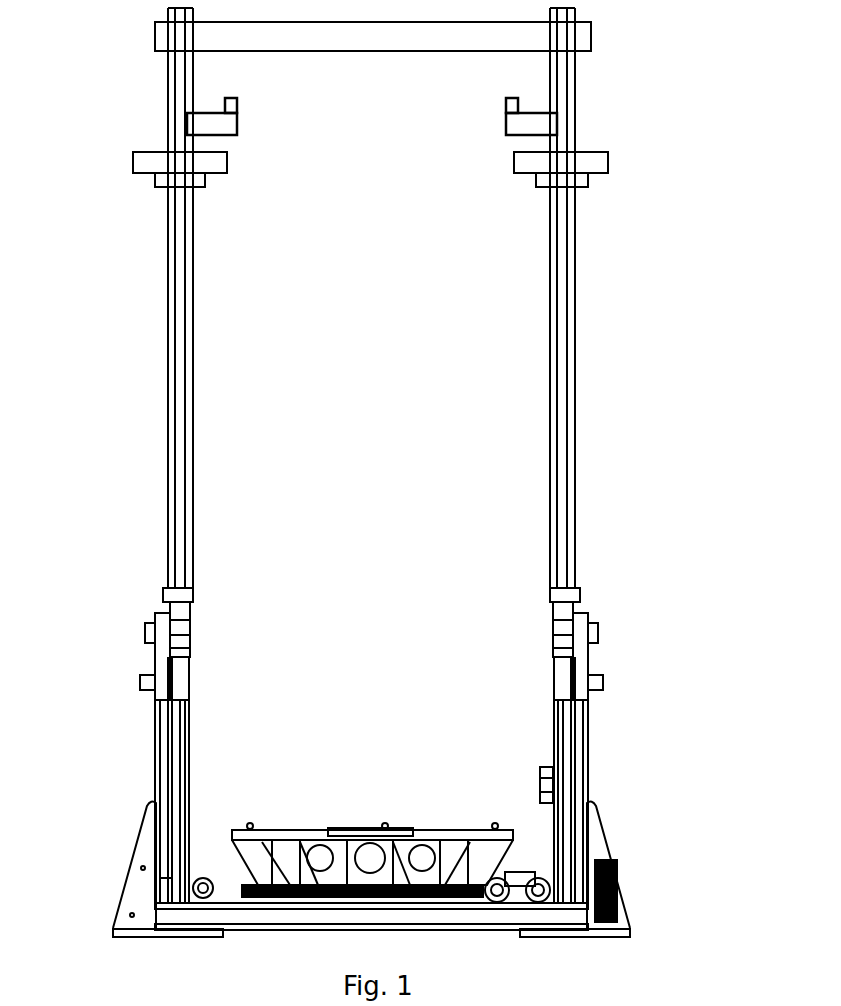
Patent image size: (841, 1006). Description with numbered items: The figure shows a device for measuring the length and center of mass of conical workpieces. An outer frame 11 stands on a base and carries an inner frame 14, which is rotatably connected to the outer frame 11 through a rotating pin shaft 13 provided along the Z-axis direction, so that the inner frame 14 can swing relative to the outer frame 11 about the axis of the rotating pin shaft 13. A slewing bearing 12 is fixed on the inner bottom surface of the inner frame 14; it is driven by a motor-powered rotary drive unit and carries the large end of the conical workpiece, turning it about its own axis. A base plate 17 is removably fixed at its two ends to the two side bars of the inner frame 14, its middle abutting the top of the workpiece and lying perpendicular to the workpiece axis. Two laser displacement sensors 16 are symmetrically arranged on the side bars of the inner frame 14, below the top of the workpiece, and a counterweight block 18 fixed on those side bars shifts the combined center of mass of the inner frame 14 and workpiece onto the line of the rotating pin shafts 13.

The outer frame 11 is at (165, 858).
The slewing bearing 12 is at (455, 857).
The rotating pin shaft 13 is at (155, 627).
The inner frame 14 is at (177, 493).
The laser displacement sensor 16 is at (225, 122).
The base plate 17 is at (507, 42).
The counterweight block 18 is at (177, 168).